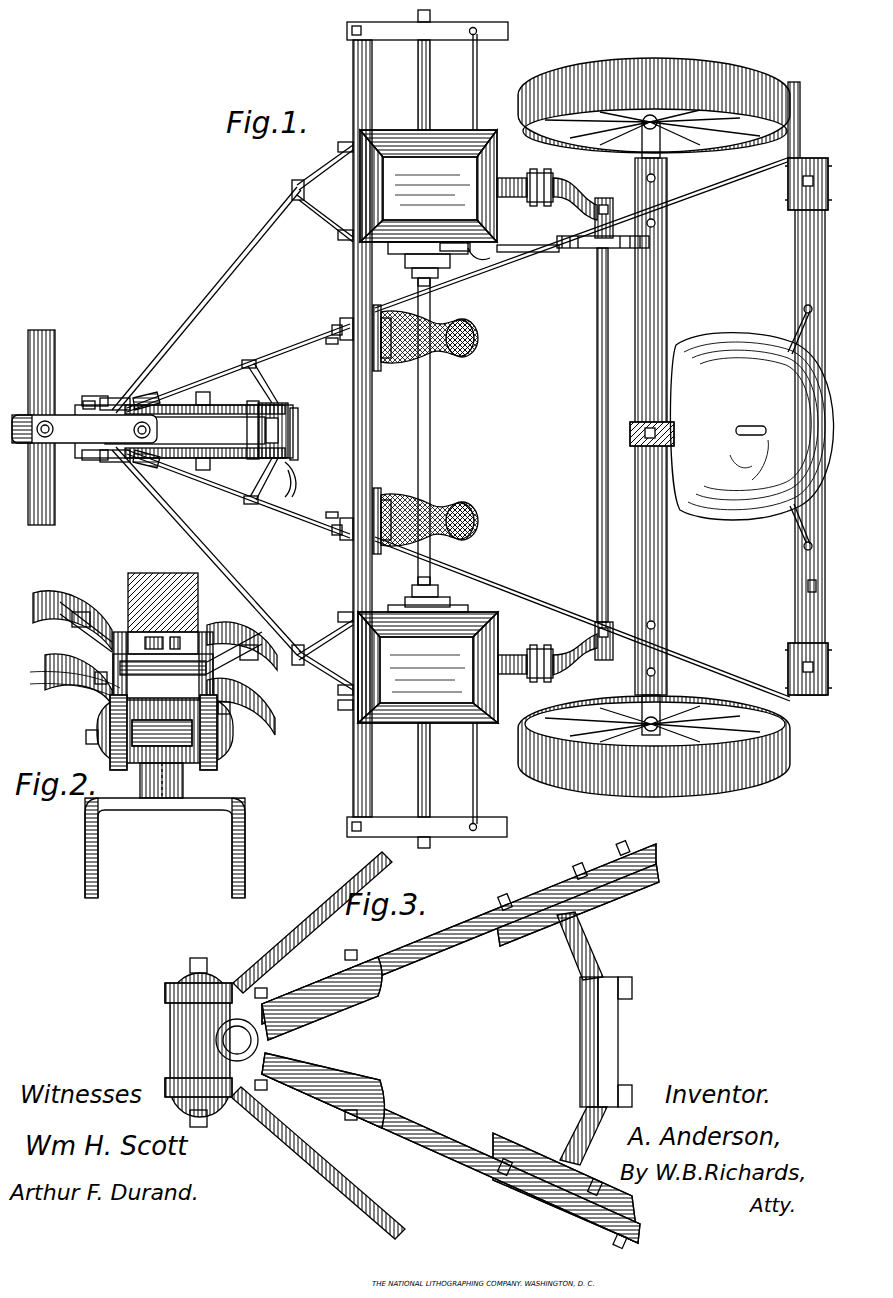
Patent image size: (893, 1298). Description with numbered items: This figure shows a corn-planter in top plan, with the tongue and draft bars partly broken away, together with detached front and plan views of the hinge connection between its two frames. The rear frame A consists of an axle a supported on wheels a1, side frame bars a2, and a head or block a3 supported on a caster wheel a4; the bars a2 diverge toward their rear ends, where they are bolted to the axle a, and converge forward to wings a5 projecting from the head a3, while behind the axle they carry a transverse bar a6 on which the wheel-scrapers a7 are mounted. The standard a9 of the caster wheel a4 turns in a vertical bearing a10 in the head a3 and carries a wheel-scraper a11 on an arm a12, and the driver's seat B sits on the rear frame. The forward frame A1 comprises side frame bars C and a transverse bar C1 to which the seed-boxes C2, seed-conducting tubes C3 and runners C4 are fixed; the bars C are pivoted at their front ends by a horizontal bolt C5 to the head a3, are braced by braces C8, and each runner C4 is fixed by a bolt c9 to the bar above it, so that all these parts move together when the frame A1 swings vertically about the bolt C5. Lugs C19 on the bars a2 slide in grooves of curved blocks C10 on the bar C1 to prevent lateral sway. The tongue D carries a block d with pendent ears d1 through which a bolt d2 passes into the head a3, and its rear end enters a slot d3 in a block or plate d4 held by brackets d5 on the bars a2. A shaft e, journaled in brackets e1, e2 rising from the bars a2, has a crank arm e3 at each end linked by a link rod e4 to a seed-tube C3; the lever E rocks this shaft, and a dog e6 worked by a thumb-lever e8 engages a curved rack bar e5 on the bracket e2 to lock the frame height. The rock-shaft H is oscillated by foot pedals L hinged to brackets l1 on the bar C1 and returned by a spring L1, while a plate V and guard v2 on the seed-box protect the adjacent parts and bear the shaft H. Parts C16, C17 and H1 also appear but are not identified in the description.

In FIG. 1, the rear frame A is at (534, 413).
In FIG. 3, the rear frame A is at (500, 1030).
In FIG. 1, the forward frame A1 is at (188, 278).
In FIG. 3, the forward frame A1 is at (312, 922).
In FIG. 1, the driver's seat B is at (751, 427).
In FIG. 1, the side frame bars C is at (262, 246).
In FIG. 2, the side frame bars C is at (58, 700).
In FIG. 3, the side frame bars C is at (282, 920).
In FIG. 1, the transverse bar C1 is at (335, 570).
In FIG. 1, the seed-boxes C2 is at (440, 735).
In FIG. 1, the seed-conducting tubes C3 is at (515, 199).
In FIG. 1, the runners C4 is at (325, 170).
In FIG. 1, the horizontal bolt C5 is at (90, 400).
In FIG. 2, the horizontal bolt C5 is at (86, 738).
In FIG. 3, the horizontal bolt C5 is at (190, 962).
In FIG. 1, the braces C8 is at (320, 215).
In FIG. 1, the bolt c9 is at (326, 716).
In FIG. 1, the curved block C10 is at (335, 346).
In FIG. 1, the cross bar C16 is at (400, 40).
In FIG. 1, the rod C17 is at (478, 60).
In FIG. 1, the lugs C19 is at (320, 540).
In FIG. 1, the tongue D is at (152, 482).
In FIG. 2, the tongue D is at (163, 573).
In FIG. 2, the block d is at (155, 605).
In FIG. 2, the pendent ears d1 is at (124, 630).
In FIG. 1, the bolt d2 is at (100, 462).
In FIG. 2, the bolt d2 is at (60, 678).
In FIG. 1, the slot d3 is at (292, 408).
In FIG. 1, the block or plate d4 is at (290, 415).
In FIG. 1, the brackets d5 is at (270, 446).
In FIG. 3, the brackets d5 is at (600, 948).
In FIG. 1, the lever E is at (540, 253).
In FIG. 1, the shaft e is at (597, 490).
In FIG. 1, the bracket e1 is at (610, 623).
In FIG. 1, the bracket e2 is at (594, 224).
In FIG. 1, the crank arm e3 is at (590, 196).
In FIG. 1, the link rod e4 is at (540, 173).
In FIG. 1, the curved rack bar e5 is at (640, 268).
In FIG. 1, the dog e6 is at (580, 250).
In FIG. 1, the thumb-lever e8 is at (582, 234).
In FIG. 1, the rock-shaft H is at (418, 118).
In FIG. 1, the lower shaft H1 is at (430, 792).
In FIG. 1, the foot pedals L is at (430, 352).
In FIG. 1, the spring L1 is at (472, 258).
In FIG. 1, the bracket l1 is at (386, 360).
In FIG. 1, the plate V is at (390, 250).
In FIG. 1, the bracket or guard v2 is at (405, 433).
In FIG. 1, the axle a is at (667, 306).
In FIG. 1, the wheels a1 is at (600, 72).
In FIG. 1, the side frame bars a2 is at (300, 343).
In FIG. 2, the side frame bars a2 is at (78, 600).
In FIG. 3, the side frame bars a2 is at (458, 928).
In FIG. 1, the head or block a3 is at (112, 398).
In FIG. 2, the head or block a3 is at (165, 746).
In FIG. 3, the head or block a3 is at (200, 1032).
In FIG. 1, the caster wheel a4 is at (226, 406).
In FIG. 2, the caster wheel a4 is at (165, 848).
In FIG. 1, the wings a5 is at (150, 396).
In FIG. 2, the wings a5 is at (96, 615).
In FIG. 3, the wings a5 is at (316, 985).
In FIG. 1, the transverse bar a6 is at (806, 585).
In FIG. 1, the wheel-scrapers a7 is at (800, 118).
In FIG. 2, the standard a9 is at (180, 782).
In FIG. 3, the vertical bearing a10 is at (237, 1040).
In FIG. 1, the wheel-scraper a11 is at (306, 434).
In FIG. 1, the arm a12 is at (303, 481).